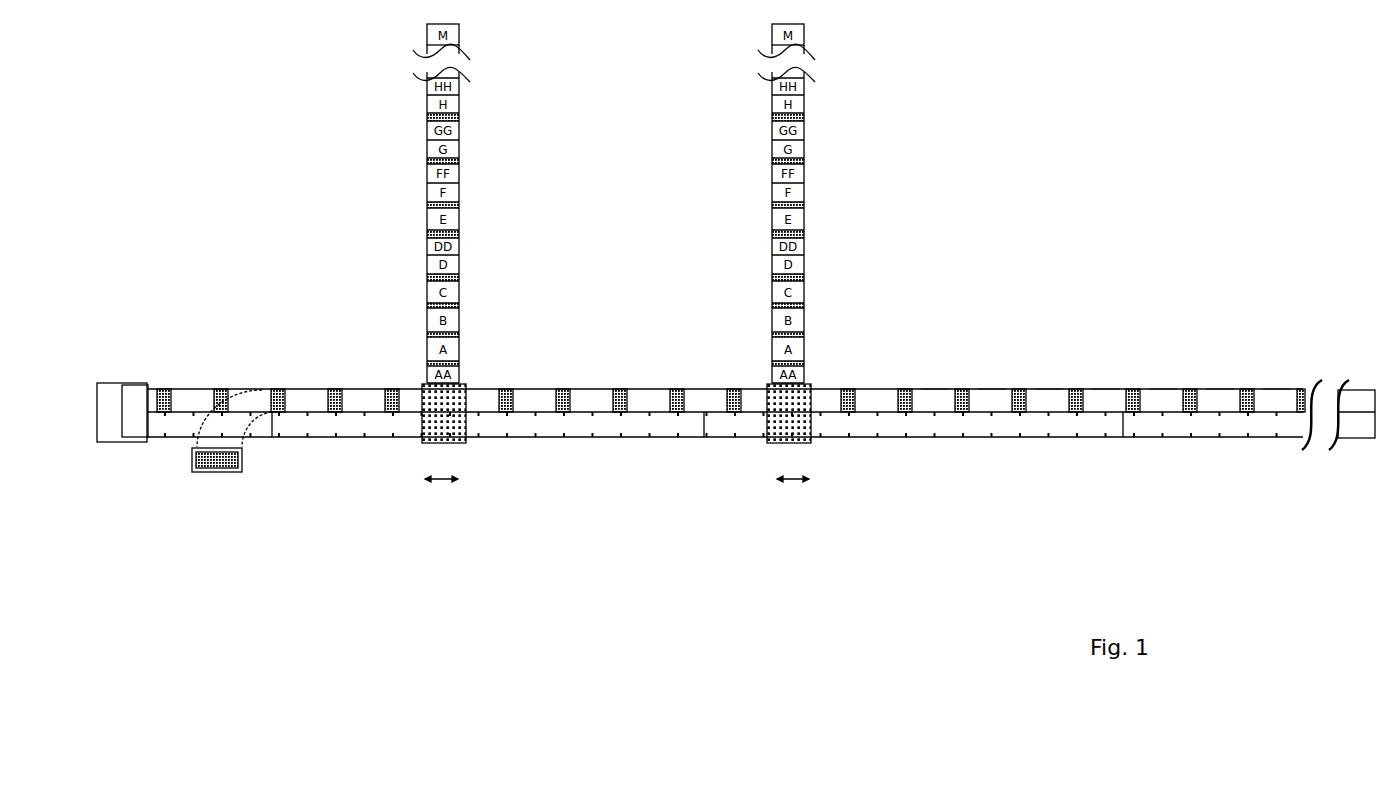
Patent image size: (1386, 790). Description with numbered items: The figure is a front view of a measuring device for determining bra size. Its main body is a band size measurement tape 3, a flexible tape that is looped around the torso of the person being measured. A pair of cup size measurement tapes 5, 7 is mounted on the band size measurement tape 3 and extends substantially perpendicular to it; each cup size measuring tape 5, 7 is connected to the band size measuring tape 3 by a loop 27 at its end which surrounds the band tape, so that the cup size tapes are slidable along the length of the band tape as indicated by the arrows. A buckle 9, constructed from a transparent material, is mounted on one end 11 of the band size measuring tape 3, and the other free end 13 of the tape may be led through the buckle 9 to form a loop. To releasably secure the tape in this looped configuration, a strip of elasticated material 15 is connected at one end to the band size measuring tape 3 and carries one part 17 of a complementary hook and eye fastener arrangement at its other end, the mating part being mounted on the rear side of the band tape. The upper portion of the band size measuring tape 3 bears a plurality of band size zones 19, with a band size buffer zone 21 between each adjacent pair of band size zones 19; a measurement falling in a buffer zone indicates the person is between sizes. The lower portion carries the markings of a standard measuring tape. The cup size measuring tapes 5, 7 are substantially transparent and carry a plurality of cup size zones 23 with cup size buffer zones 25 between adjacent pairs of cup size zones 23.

The band size measurement tape 3 is at (972, 462).
The cup size measurement tape 5 is at (388, 74).
The cup size measurement tape 7 is at (820, 62).
The buckle 9 is at (100, 388).
The one end 11 is at (122, 396).
The free end 13 is at (1123, 453).
The strip of elasticated material 15 is at (235, 408).
The part of complementary hook and eye fastener arrangement 17 is at (197, 463).
The band size zones 19 is at (935, 390).
The band size buffer zone 21 is at (907, 388).
The cup size zones 23 is at (459, 86).
The cup size buffer zones 25 is at (459, 117).
The loop 27 is at (430, 450).